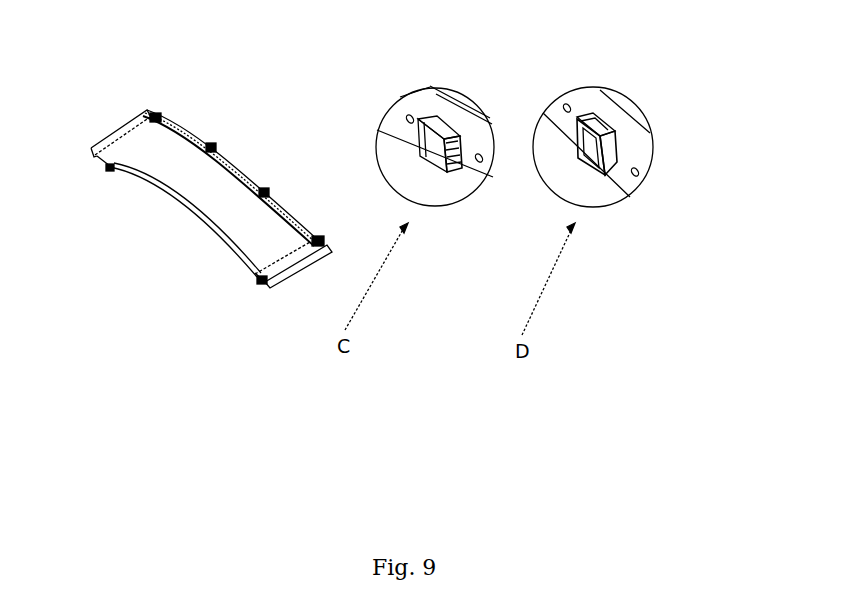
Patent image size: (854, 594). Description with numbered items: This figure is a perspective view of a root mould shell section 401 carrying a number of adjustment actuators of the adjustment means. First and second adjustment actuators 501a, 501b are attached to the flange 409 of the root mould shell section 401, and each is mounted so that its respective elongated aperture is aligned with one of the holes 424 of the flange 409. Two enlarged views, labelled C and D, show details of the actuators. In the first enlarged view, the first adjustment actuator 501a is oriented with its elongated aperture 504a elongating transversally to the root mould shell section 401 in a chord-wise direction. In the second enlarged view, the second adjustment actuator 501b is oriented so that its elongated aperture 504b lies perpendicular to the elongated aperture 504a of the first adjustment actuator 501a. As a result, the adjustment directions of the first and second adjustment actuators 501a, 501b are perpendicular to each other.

The root mould shell section 401 is at (113, 138).
The flange 409 is at (173, 118).
The holes 424 is at (229, 150).
The first adjustment actuator 501a is at (318, 235).
The second adjustment actuator 501b is at (262, 188).
The elongated aperture 504a is at (436, 165).
The elongated aperture 504b is at (612, 124).